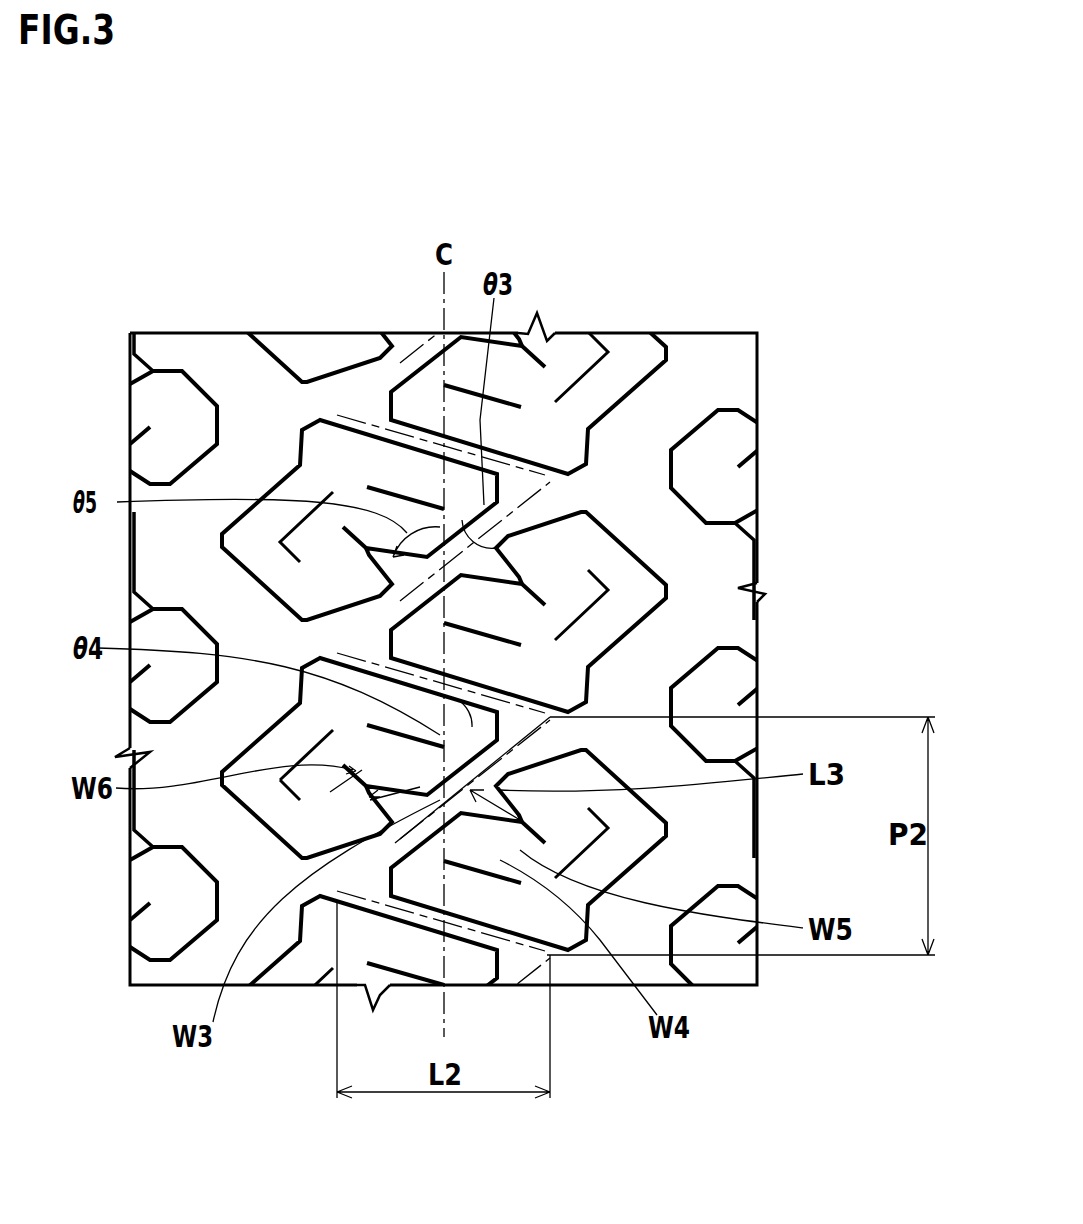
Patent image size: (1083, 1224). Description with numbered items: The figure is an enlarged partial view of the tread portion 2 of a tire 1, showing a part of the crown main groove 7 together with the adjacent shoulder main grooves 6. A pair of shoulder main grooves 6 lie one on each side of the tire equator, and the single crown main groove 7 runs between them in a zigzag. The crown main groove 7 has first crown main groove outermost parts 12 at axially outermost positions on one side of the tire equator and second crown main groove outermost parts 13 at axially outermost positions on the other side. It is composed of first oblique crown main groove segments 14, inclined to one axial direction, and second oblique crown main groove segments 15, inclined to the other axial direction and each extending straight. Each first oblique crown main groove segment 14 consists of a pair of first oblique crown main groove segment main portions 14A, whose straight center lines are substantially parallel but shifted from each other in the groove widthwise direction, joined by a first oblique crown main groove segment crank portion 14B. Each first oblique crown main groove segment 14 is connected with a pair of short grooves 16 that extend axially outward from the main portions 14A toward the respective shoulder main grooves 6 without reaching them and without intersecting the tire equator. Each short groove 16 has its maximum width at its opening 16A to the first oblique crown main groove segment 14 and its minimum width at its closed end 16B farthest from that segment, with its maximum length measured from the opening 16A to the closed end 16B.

The pneumatic tire 1 is at (814, 194).
The tread portion 2 is at (590, 265).
The shoulder main groove 6 is at (225, 337).
The crown main groove 7 is at (888, 393).
The first crown main groove outermost part 12 is at (557, 490).
The second crown main groove outermost part 13 is at (318, 864).
The first oblique crown main groove segment 14 is at (538, 638).
The first oblique crown main groove segment main portion 14A is at (500, 533).
The first oblique crown main groove segment crank portion 14B is at (440, 612).
The second oblique crown main groove segment 15 is at (445, 684).
The short groove 16 is at (469, 566).
The opening 16A is at (362, 770).
The closed end 16B is at (435, 745).